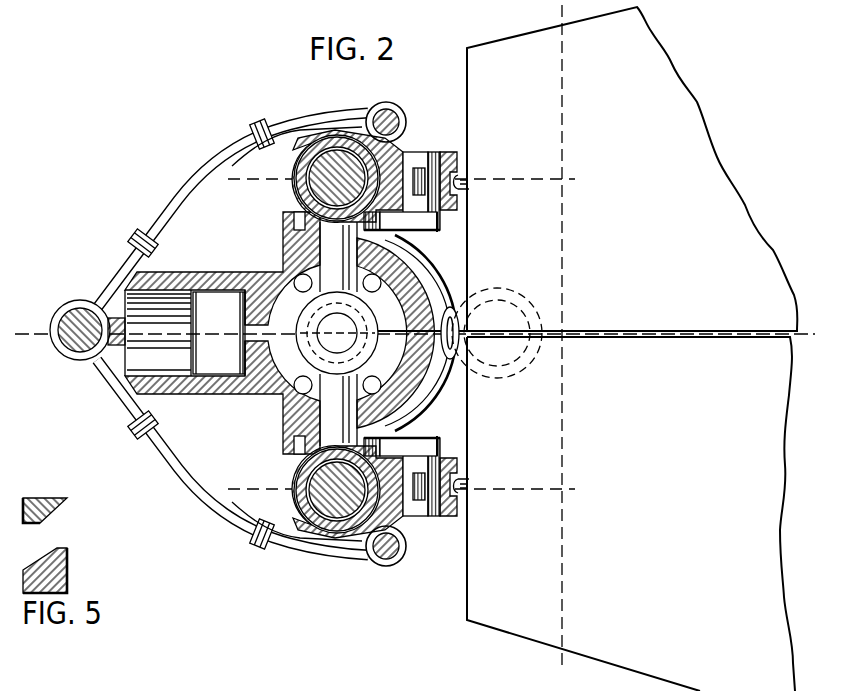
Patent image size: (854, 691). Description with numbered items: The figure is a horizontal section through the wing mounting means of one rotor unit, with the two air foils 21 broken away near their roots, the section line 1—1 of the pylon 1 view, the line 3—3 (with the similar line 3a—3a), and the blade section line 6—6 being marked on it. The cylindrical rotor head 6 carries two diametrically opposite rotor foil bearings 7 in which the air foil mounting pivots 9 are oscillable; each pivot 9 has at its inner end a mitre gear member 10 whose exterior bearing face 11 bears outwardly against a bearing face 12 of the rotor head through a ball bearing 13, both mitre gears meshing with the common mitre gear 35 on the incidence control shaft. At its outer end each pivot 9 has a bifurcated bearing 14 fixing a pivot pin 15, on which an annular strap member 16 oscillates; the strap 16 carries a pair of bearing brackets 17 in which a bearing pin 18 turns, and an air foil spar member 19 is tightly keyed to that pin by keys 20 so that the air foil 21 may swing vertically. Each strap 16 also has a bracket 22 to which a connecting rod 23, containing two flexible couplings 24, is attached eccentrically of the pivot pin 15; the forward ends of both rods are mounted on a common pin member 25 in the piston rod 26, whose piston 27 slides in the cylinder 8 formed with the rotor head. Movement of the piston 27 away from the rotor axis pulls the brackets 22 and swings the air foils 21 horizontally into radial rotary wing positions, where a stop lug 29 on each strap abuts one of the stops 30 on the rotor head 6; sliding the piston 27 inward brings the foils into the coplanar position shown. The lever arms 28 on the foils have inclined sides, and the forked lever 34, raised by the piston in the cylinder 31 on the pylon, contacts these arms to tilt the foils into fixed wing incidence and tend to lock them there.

In FIG. 2, the pylon 1 is at (40, 326).
In FIG. 2, the flanged member 3 is at (254, 489).
In FIG. 2, the section line 3a- 3a is at (401, 190).
In FIG. 2, the rotor head 6 is at (562, 103).
In FIG. 2, the rotor foil bearing 7 is at (283, 258).
In FIG. 2, the cylinder 8 is at (212, 272).
In FIG. 2, the air foil mounting pivot 9 is at (338, 334).
In FIG. 2, the mitre gear member 10 is at (367, 304).
In FIG. 2, the bearing face 11 is at (297, 291).
In FIG. 2, the bearing face 12 is at (391, 263).
In FIG. 2, the ball bearing 13 is at (407, 271).
In FIG. 2, the bifurcated bearing 14 is at (295, 182).
In FIG. 2, the pivot pin 15 is at (312, 169).
In FIG. 2, the annular strap member 16 is at (323, 133).
In FIG. 2, the bearing bracket 17 is at (450, 152).
In FIG. 2, the bearing pin 18 is at (434, 151).
In FIG. 2, the air foil spar member 19 is at (462, 181).
In FIG. 2, the key 20 is at (412, 151).
In FIG. 2, the air foil 21 is at (733, 201).
In FIG. 2, the bracket 22 is at (385, 109).
In FIG. 2, the connecting rod 23 is at (176, 196).
In FIG. 2, the flexible coupling 24 is at (262, 122).
In FIG. 2, the common pin member 25 is at (73, 353).
In FIG. 2, the piston rod 26 is at (159, 333).
In FIG. 2, the piston 27 is at (219, 333).
In FIG. 2, the lever arm 28 is at (425, 222).
In FIG. 5, the lever arm 28 is at (30, 497).
In FIG. 2, the stop or lug 29 is at (295, 128).
In FIG. 2, the stop or lug 30 is at (285, 223).
In FIG. 2, the cylinder 31 is at (502, 286).
In FIG. 2, the forked arm or lever 34 is at (449, 274).
In FIG. 5, the forked arm or lever 34 is at (70, 582).
In FIG. 2, the common mitre gear 35 is at (358, 331).